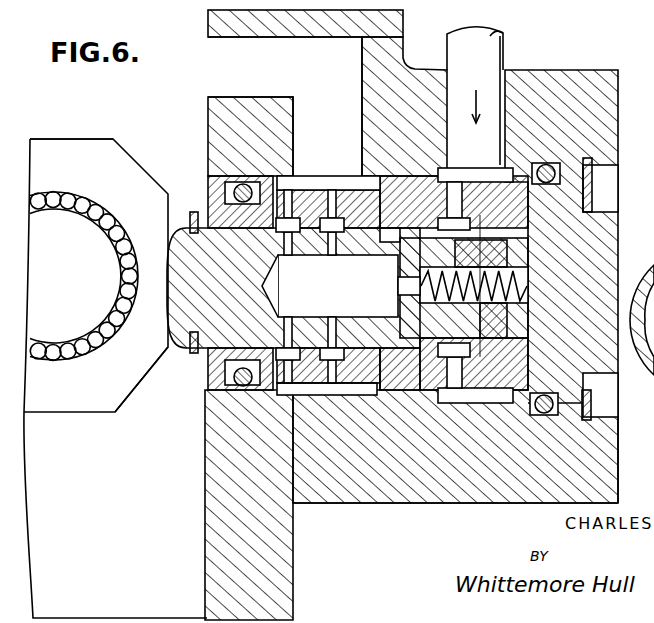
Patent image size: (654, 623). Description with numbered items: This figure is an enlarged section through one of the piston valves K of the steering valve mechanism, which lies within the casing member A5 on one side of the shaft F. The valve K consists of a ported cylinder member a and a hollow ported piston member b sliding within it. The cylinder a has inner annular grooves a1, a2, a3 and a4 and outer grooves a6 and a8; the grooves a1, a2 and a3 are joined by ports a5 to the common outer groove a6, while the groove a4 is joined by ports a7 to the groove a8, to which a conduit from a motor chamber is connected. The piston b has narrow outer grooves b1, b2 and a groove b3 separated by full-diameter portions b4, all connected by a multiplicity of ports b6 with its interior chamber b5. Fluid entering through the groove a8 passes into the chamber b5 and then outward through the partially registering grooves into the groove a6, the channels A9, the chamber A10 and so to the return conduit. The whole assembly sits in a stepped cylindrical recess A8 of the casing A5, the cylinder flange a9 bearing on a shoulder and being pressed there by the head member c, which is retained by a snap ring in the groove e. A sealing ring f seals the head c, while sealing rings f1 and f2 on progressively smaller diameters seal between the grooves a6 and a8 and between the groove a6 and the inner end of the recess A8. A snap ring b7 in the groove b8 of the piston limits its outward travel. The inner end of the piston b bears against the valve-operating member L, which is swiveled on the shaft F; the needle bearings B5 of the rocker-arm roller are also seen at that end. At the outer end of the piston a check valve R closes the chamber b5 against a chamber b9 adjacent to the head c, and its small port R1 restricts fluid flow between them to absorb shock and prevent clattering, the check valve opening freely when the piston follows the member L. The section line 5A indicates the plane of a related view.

The shaft F is at (57, 223).
The valve-operating member L is at (104, 158).
The needle bearings B5 is at (100, 214).
The chamber A10 is at (278, 50).
The channels A9 is at (285, 106).
The cylindrical recess A8 is at (600, 413).
The casing member A5 is at (604, 494).
The cylinder member a is at (208, 191).
The annular groove a1 is at (300, 192).
The annular groove a2 is at (337, 193).
The annular groove a3 is at (402, 82).
The annular groove a4 is at (430, 168).
The ports a5 is at (291, 200).
The annular groove a6 is at (322, 192).
The ports a7 is at (450, 198).
The groove a8 is at (492, 182).
The flange a9 is at (505, 404).
The piston member b is at (183, 200).
The narrow groove b1 is at (273, 383).
The narrow groove b2 is at (305, 396).
The groove b3 is at (377, 398).
The full-diameter portions b4 is at (290, 390).
The chamber b5 is at (338, 286).
The ports b6 is at (388, 245).
The snap ring b7 is at (137, 398).
The groove b8 is at (190, 340).
The chamber b9 is at (518, 328).
The head member c is at (612, 380).
The groove e is at (588, 172).
The sealing ring f is at (545, 168).
The sealing ring f1 is at (400, 404).
The sealing ring f2 is at (240, 386).
The valve K is at (192, 377).
The check valve R is at (510, 246).
The port R1 is at (410, 285).
The section line 5A is at (481, 287).